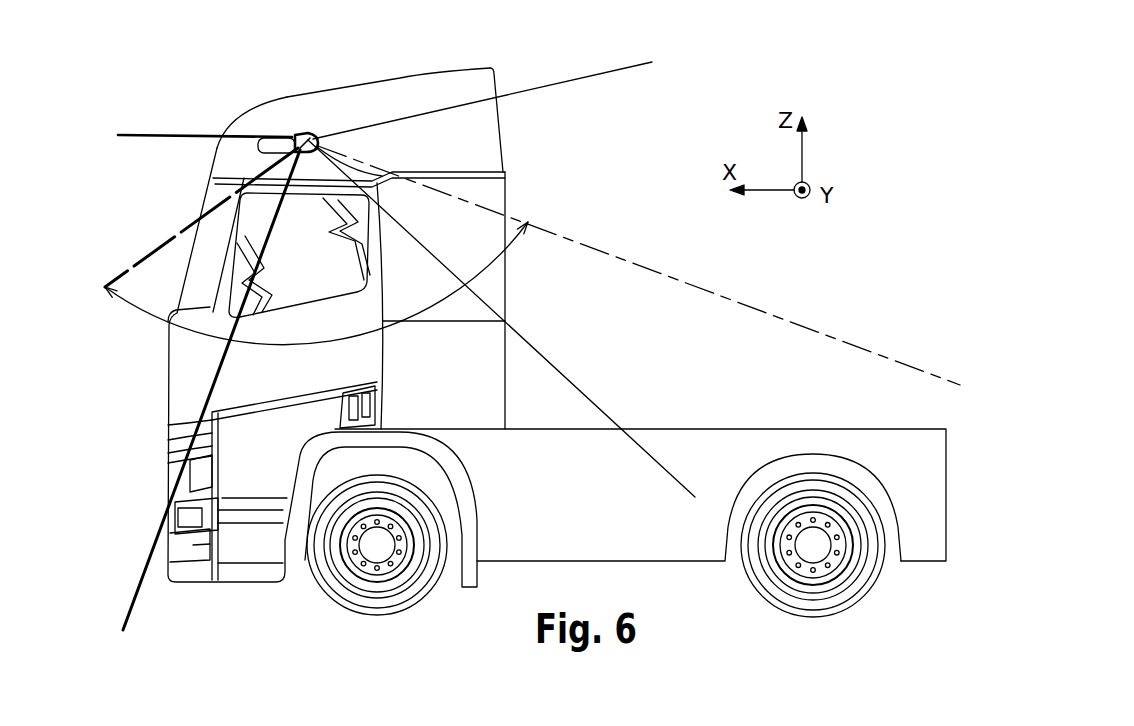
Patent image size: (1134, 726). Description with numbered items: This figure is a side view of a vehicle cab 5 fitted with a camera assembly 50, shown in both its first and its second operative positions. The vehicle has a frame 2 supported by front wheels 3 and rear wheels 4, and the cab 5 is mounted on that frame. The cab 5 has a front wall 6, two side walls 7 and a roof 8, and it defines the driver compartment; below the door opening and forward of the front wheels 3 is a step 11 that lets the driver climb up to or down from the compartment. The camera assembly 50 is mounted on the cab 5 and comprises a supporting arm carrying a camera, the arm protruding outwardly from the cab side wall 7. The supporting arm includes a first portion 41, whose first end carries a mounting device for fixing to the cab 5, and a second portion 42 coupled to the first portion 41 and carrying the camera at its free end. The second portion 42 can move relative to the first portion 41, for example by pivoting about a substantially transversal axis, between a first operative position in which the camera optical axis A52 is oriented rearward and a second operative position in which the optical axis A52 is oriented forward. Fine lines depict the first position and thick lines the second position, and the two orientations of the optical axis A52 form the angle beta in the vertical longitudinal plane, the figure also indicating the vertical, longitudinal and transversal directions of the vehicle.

The frame 2 is at (933, 531).
The front wheels 3 is at (420, 582).
The rear wheels 4 is at (765, 577).
The cab 5 is at (434, 56).
The front wall 6 is at (167, 410).
The side wall 7 is at (477, 393).
The roof 8 is at (408, 78).
The step 11 is at (253, 521).
The first portion 41 is at (265, 139).
The second portion 42 is at (314, 133).
The camera assembly 50 is at (287, 119).
The camera optical axis A52 is at (110, 272).